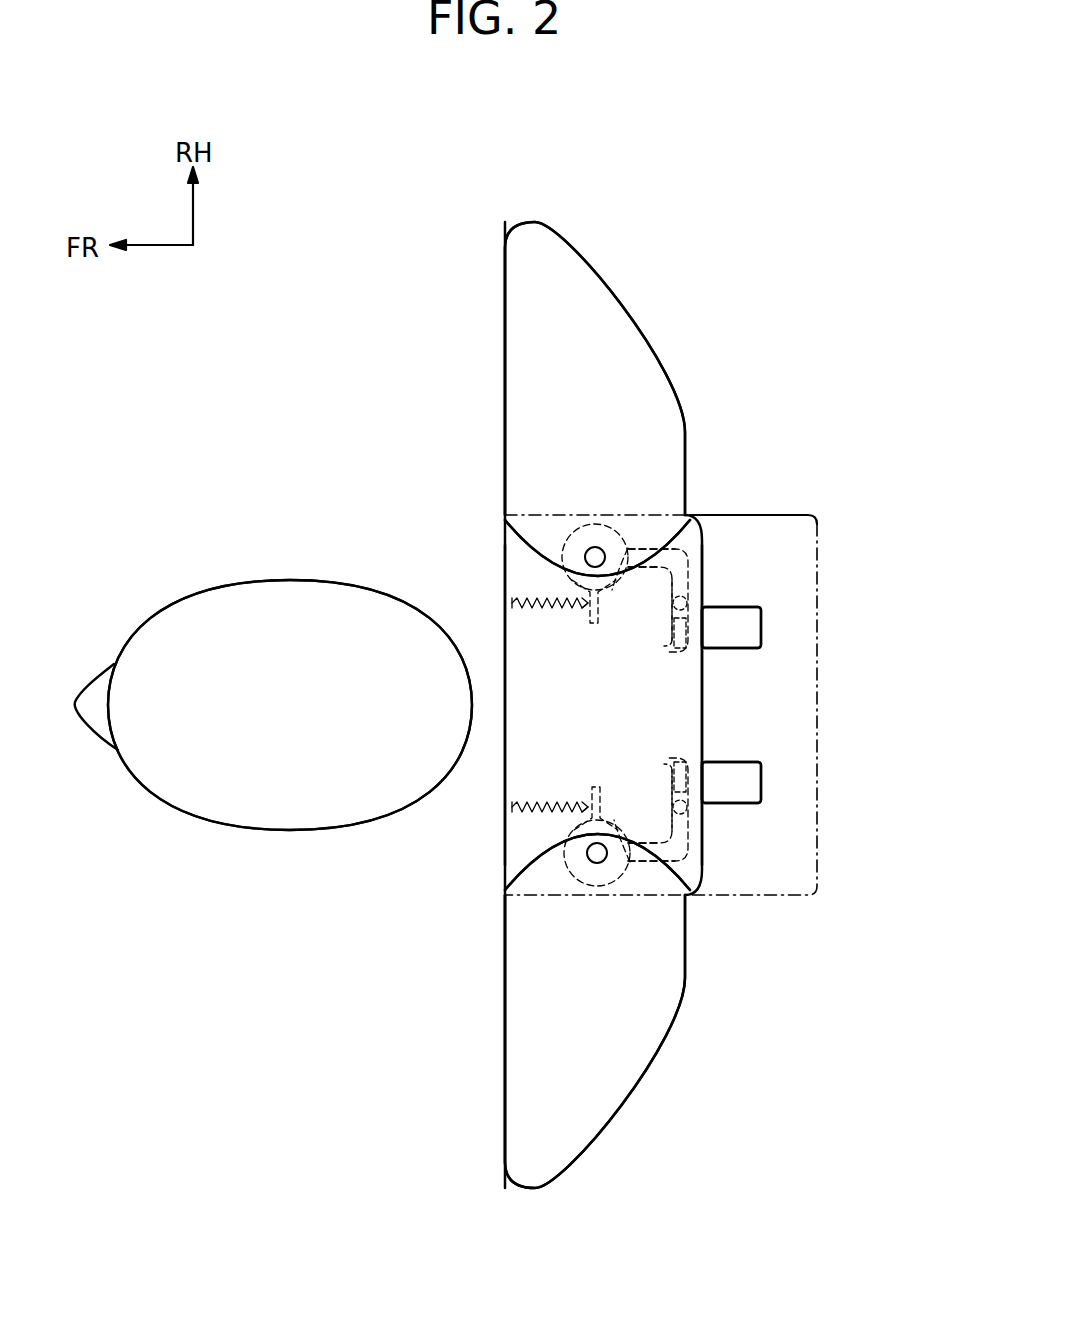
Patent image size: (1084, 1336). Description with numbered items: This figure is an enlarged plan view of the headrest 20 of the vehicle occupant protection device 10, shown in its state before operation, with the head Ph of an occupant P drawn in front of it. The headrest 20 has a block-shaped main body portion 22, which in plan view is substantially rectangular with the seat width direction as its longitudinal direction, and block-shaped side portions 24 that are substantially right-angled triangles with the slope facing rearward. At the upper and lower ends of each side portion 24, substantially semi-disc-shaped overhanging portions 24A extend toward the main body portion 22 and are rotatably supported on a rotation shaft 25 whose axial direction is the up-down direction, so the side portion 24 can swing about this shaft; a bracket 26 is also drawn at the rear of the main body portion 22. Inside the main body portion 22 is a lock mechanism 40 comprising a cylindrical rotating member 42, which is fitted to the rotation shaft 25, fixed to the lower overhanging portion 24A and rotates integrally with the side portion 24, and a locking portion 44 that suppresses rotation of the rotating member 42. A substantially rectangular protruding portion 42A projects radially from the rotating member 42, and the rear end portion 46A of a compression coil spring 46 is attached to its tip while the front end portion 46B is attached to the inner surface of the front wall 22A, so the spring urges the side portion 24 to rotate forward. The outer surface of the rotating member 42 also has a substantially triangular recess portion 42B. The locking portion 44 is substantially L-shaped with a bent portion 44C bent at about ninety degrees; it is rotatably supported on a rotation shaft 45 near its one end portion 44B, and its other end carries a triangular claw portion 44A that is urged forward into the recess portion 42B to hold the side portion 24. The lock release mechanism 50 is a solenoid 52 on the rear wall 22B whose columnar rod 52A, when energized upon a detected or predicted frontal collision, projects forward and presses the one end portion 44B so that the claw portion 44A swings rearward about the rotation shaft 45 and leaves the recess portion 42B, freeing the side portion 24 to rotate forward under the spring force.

The vehicle seat airbag device 10 is at (606, 222).
The headrest 20 is at (486, 502).
The main body portion 22 is at (503, 707).
The front wall 22A is at (505, 752).
The rear wall 22B is at (703, 707).
The side portion 24 is at (512, 230).
The overhanging portion 24A is at (505, 540).
The rotation shaft 25 is at (590, 546).
The headrest stay bracket 26 is at (820, 522).
The lock mechanism 40 is at (647, 590).
The rotating member 42 is at (556, 535).
The protruding portion 42A is at (593, 627).
The recess portion 42B is at (608, 540).
The locking portion 44 is at (686, 546).
The claw portion 44A is at (650, 540).
The one end portion 44B is at (680, 657).
The bent portion 44C is at (704, 580).
The rotation shaft 45 is at (666, 612).
The compression coil spring 46 is at (530, 597).
The rear end portion 46A is at (588, 618).
The front end portion 46B is at (505, 605).
The lock release mechanism 50 is at (733, 607).
The solenoid 52 is at (761, 627).
The rod 52A is at (707, 598).
The occupant P is at (258, 578).
The occupant head Ph is at (247, 797).